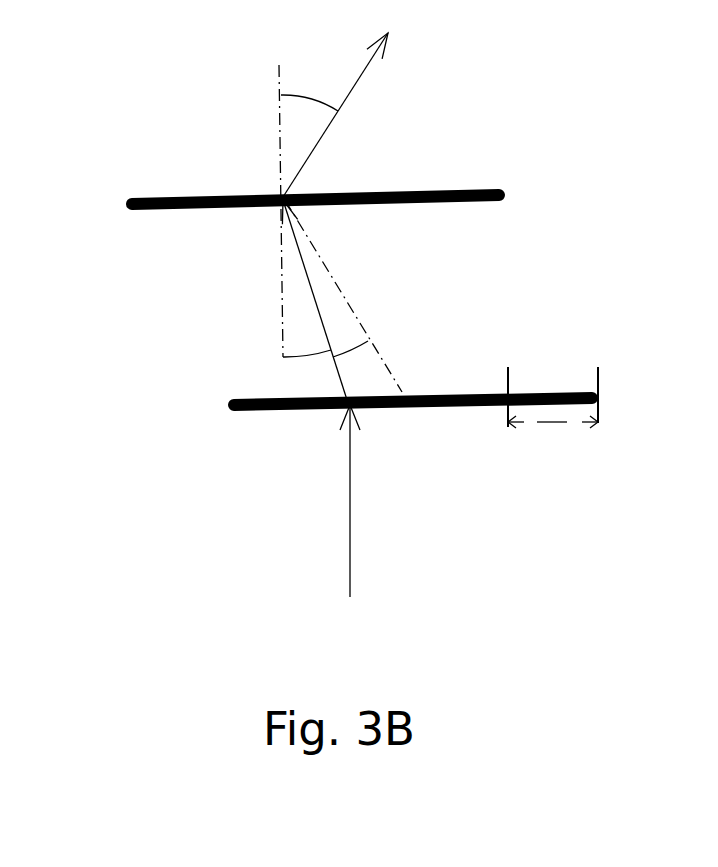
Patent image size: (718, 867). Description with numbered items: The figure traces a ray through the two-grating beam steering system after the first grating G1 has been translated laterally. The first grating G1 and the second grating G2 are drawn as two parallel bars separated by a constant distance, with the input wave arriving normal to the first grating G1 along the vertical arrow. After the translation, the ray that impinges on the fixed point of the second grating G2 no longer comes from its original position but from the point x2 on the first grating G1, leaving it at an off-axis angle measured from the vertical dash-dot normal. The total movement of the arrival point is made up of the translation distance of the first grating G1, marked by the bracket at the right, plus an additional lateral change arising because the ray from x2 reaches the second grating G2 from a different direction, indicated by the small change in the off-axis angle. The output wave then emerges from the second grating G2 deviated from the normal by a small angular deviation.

The second grating G2 is at (365, 197).
The first grating G1 is at (466, 400).
The ray origin on first grating after translation x2 is at (332, 501).